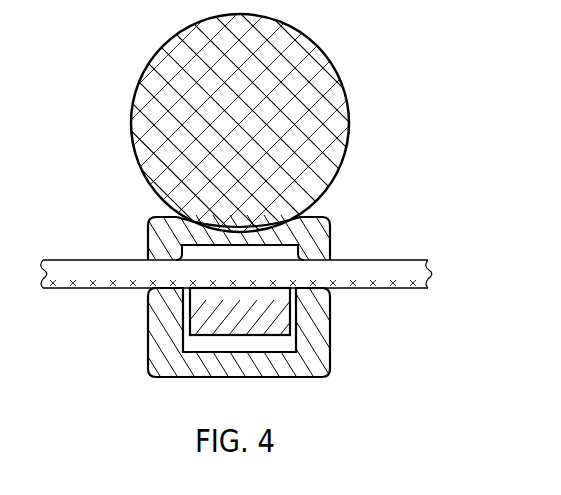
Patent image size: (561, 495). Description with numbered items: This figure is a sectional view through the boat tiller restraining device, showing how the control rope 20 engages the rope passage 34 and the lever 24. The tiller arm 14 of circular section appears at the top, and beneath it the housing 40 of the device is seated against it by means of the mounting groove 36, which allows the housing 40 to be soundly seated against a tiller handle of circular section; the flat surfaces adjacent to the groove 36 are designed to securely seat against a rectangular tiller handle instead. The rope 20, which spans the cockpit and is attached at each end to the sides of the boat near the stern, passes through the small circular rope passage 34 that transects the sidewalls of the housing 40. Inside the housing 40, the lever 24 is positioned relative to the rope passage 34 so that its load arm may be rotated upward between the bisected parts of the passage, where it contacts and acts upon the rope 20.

The tiller arm 14 is at (152, 60).
The control rope 20 is at (380, 289).
The lever 24 is at (190, 318).
The rope passage 34 is at (331, 256).
The mounting groove 36 is at (207, 225).
The housing 40 is at (157, 378).